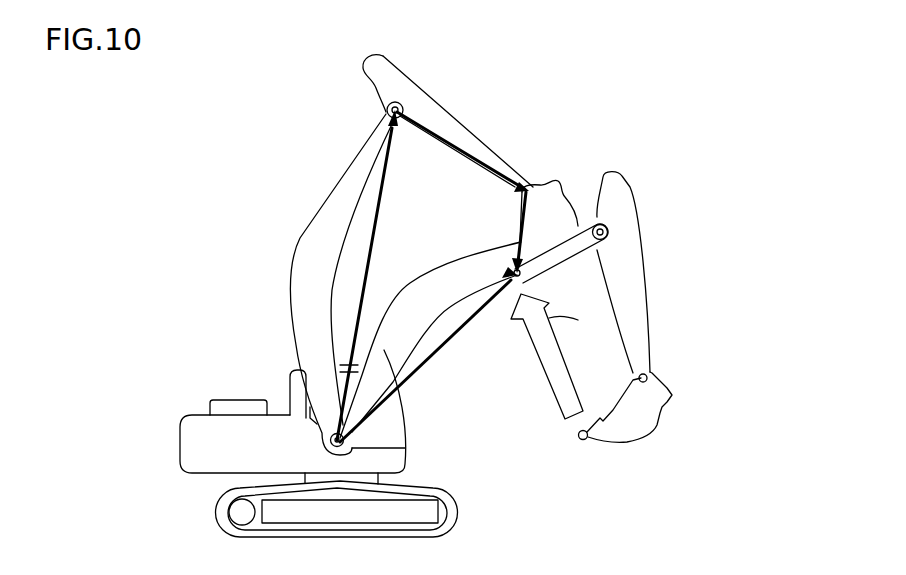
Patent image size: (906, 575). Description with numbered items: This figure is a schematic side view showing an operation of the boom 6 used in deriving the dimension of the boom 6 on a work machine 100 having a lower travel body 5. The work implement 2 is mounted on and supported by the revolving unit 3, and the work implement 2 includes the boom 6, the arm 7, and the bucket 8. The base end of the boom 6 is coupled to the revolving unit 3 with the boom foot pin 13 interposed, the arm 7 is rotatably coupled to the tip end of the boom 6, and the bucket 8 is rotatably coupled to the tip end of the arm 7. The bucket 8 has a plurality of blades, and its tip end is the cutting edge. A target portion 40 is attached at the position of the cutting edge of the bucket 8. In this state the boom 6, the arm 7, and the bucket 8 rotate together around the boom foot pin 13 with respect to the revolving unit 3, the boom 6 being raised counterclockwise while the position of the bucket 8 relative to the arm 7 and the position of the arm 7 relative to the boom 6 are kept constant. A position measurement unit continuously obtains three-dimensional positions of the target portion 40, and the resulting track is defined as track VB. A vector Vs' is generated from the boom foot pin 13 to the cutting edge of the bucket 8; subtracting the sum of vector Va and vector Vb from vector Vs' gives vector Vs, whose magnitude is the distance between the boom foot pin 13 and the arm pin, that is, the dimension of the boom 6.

The work implement 2 is at (323, 157).
The revolving unit 3 is at (193, 440).
The lower travel body 5 is at (215, 512).
The boom 6 is at (297, 277).
The arm 7 is at (447, 114).
The bucket 8 is at (546, 188).
The boom foot pin 13 is at (345, 452).
The target portion 40 is at (513, 283).
The hydraulic excavator 100 is at (187, 360).